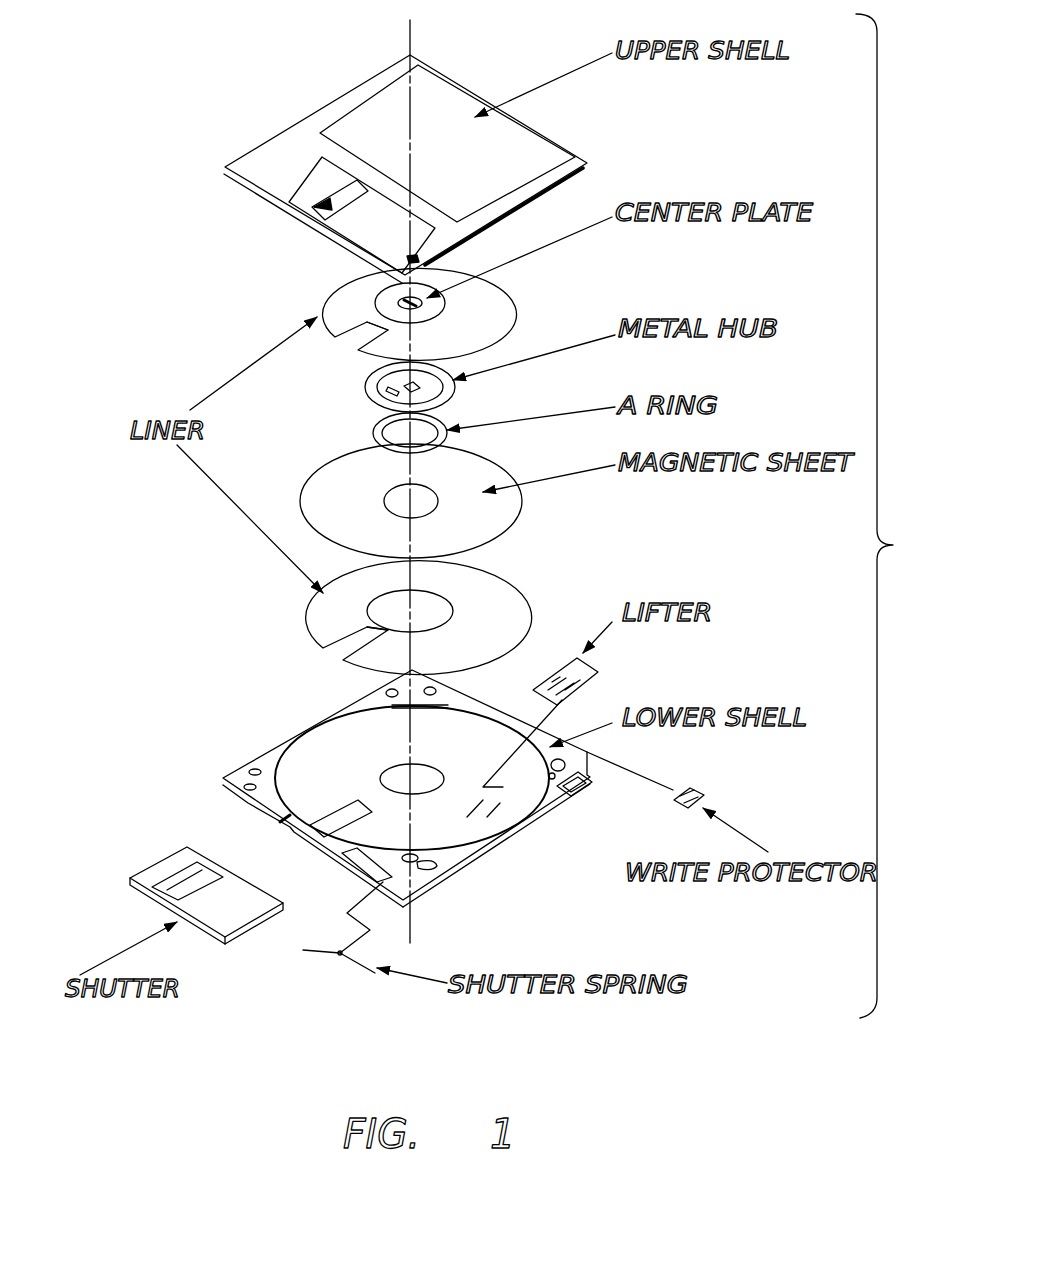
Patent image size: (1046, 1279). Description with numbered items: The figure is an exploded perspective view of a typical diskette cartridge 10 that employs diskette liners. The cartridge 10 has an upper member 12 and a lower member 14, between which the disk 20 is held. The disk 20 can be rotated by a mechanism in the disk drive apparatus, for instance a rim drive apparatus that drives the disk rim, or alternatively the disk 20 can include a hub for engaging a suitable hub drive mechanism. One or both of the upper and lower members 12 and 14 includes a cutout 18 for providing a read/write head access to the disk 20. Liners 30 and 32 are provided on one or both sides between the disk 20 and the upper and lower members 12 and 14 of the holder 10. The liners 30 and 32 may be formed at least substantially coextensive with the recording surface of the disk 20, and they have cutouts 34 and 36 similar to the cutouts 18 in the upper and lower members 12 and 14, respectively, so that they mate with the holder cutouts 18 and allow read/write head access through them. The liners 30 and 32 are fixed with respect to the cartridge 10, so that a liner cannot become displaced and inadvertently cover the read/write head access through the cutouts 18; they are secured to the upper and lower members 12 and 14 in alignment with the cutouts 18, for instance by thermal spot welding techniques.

The diskette cartridge 10 is at (890, 516).
The upper member 12 is at (256, 140).
The lower member 14 is at (235, 797).
The cutout 18 is at (307, 223).
The disk 20 is at (310, 473).
The liner 30 is at (312, 294).
The liner 32 is at (293, 607).
The cutout 34 is at (343, 343).
The cutout 36 is at (345, 658).